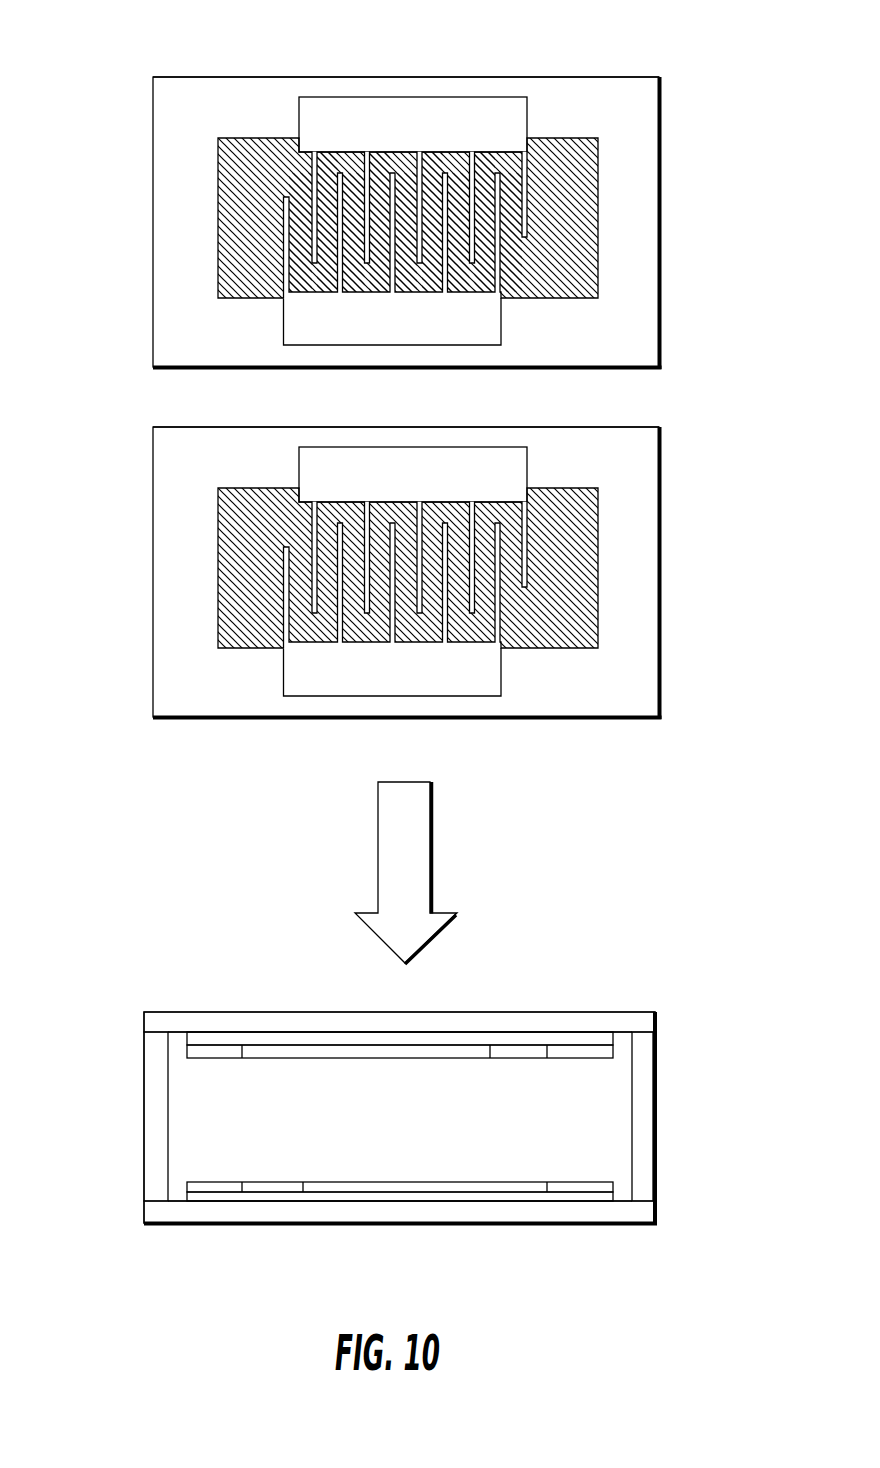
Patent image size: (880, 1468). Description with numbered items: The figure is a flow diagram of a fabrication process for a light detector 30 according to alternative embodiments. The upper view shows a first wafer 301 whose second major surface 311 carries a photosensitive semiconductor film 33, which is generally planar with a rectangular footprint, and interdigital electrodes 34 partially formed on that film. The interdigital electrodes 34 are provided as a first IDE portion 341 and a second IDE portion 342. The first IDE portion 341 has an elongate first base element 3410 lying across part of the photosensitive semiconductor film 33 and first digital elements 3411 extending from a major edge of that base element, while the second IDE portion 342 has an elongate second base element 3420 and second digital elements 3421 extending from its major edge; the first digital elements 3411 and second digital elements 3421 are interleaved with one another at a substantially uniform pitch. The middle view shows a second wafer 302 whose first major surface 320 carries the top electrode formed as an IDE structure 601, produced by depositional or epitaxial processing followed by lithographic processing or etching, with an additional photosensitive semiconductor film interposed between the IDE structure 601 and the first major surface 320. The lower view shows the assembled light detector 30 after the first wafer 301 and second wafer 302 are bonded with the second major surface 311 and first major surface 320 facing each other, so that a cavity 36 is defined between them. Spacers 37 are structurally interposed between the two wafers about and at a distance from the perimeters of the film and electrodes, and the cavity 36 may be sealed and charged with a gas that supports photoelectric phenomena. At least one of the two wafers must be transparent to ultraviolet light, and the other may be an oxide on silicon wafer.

The light detector 30 is at (143, 1022).
The first wafer 301 is at (152, 130).
The second wafer 302 is at (152, 517).
The second major surface 311 is at (633, 117).
The first major surface 320 is at (632, 508).
The photosensitive semiconductor film 33 is at (406, 660).
The interdigital electrodes 34 is at (406, 660).
The first IDE portion 341 is at (517, 165).
The first base element 3410 is at (488, 113).
The first digital elements 3411 is at (472, 219).
The second IDE portion 342 is at (406, 247).
The second base element 3420 is at (490, 314).
The second digital elements 3421 is at (337, 280).
The cavity 36 is at (416, 1128).
The spacers 37 is at (152, 1112).
The IDE structure 601 is at (406, 746).